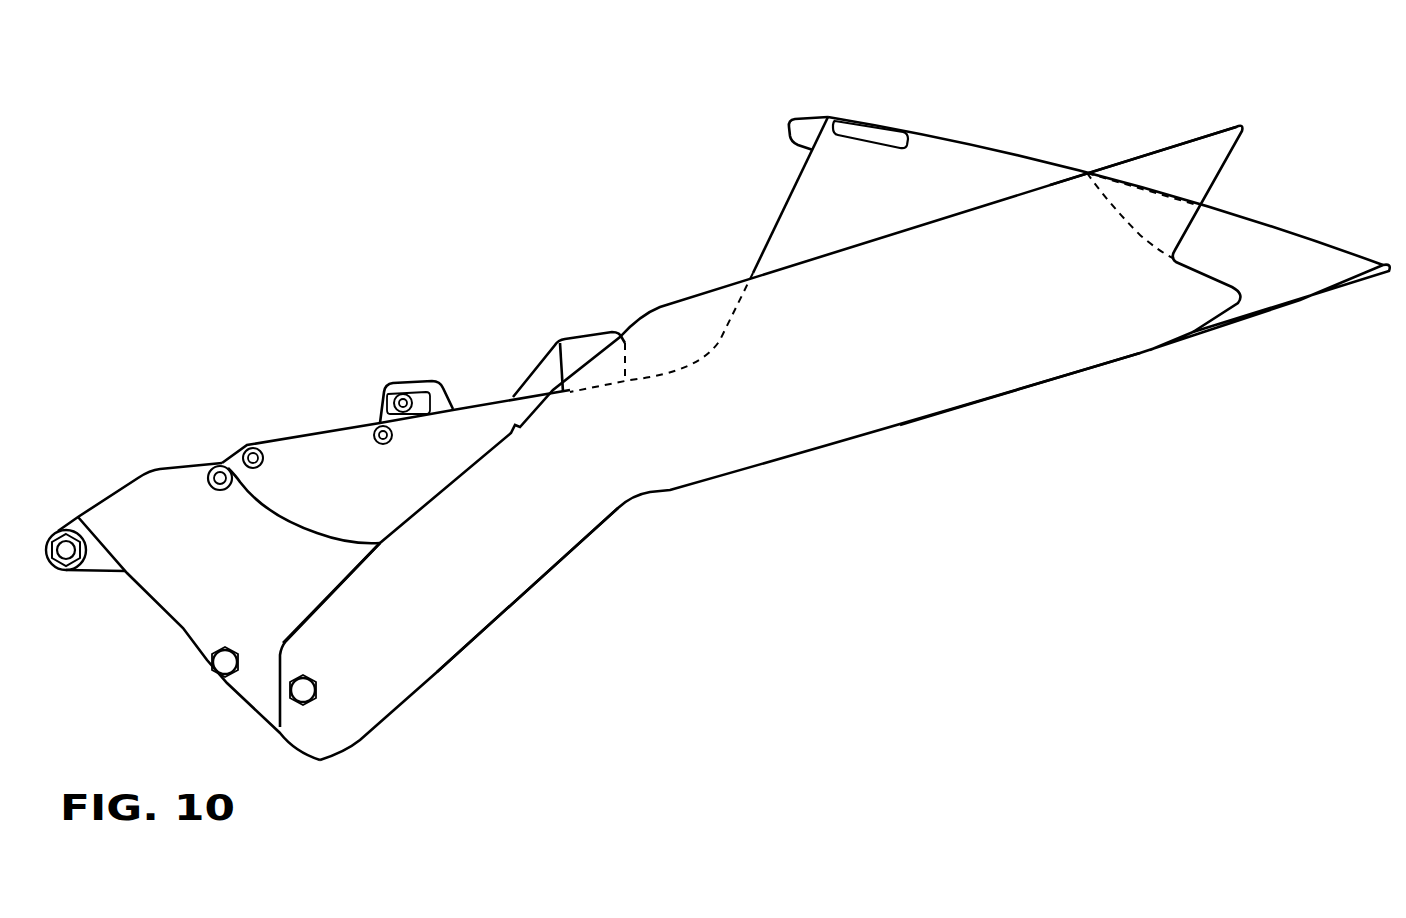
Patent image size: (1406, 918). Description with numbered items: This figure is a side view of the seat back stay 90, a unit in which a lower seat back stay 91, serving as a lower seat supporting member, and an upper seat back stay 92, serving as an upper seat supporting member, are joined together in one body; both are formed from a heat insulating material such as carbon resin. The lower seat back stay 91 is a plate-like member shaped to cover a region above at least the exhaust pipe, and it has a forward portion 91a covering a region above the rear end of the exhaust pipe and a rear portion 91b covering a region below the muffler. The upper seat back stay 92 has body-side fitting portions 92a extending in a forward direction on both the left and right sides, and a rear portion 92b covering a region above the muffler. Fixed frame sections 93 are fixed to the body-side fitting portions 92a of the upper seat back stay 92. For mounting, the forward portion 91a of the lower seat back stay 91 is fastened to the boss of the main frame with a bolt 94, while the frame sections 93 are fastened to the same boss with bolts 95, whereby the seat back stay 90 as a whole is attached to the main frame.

The seat back stay 90 is at (1072, 112).
The lower seat back stay 91 is at (948, 436).
The forward portion 91a is at (488, 610).
The rear portion 91b is at (1090, 355).
The upper seat back stay 92 is at (935, 158).
The body-side fitting portions 92a is at (337, 477).
The rear portion 92b is at (805, 198).
The fixed frame sections 93 is at (163, 505).
The bolt 94 is at (320, 690).
The bolts 95 is at (68, 573).